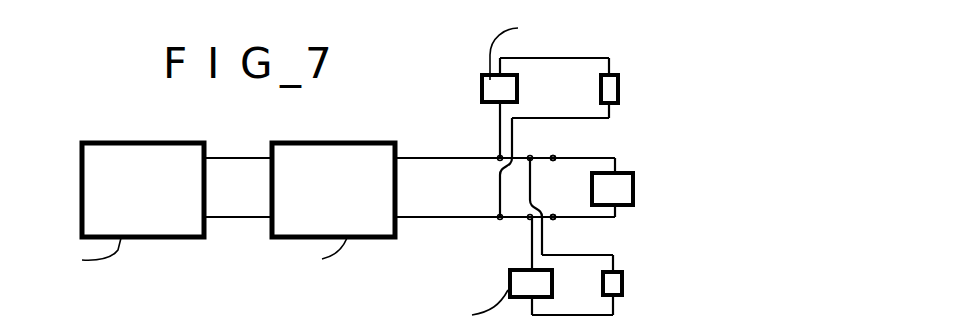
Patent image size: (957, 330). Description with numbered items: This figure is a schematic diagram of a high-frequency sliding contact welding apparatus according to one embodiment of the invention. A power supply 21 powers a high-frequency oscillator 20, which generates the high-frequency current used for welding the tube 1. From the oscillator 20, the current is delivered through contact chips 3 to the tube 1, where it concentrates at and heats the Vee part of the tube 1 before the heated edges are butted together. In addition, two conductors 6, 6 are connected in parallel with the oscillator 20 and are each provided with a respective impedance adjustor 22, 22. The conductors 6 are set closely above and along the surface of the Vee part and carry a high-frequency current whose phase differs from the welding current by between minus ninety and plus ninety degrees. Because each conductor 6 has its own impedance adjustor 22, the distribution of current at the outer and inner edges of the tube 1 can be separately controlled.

The tube 1 is at (622, 188).
The contact chip 3 is at (553, 157).
The conductor 6 is at (620, 88).
The high-frequency oscillator 20 is at (318, 202).
The power supply 21 is at (117, 203).
The impedance adjustor 22 is at (488, 85).